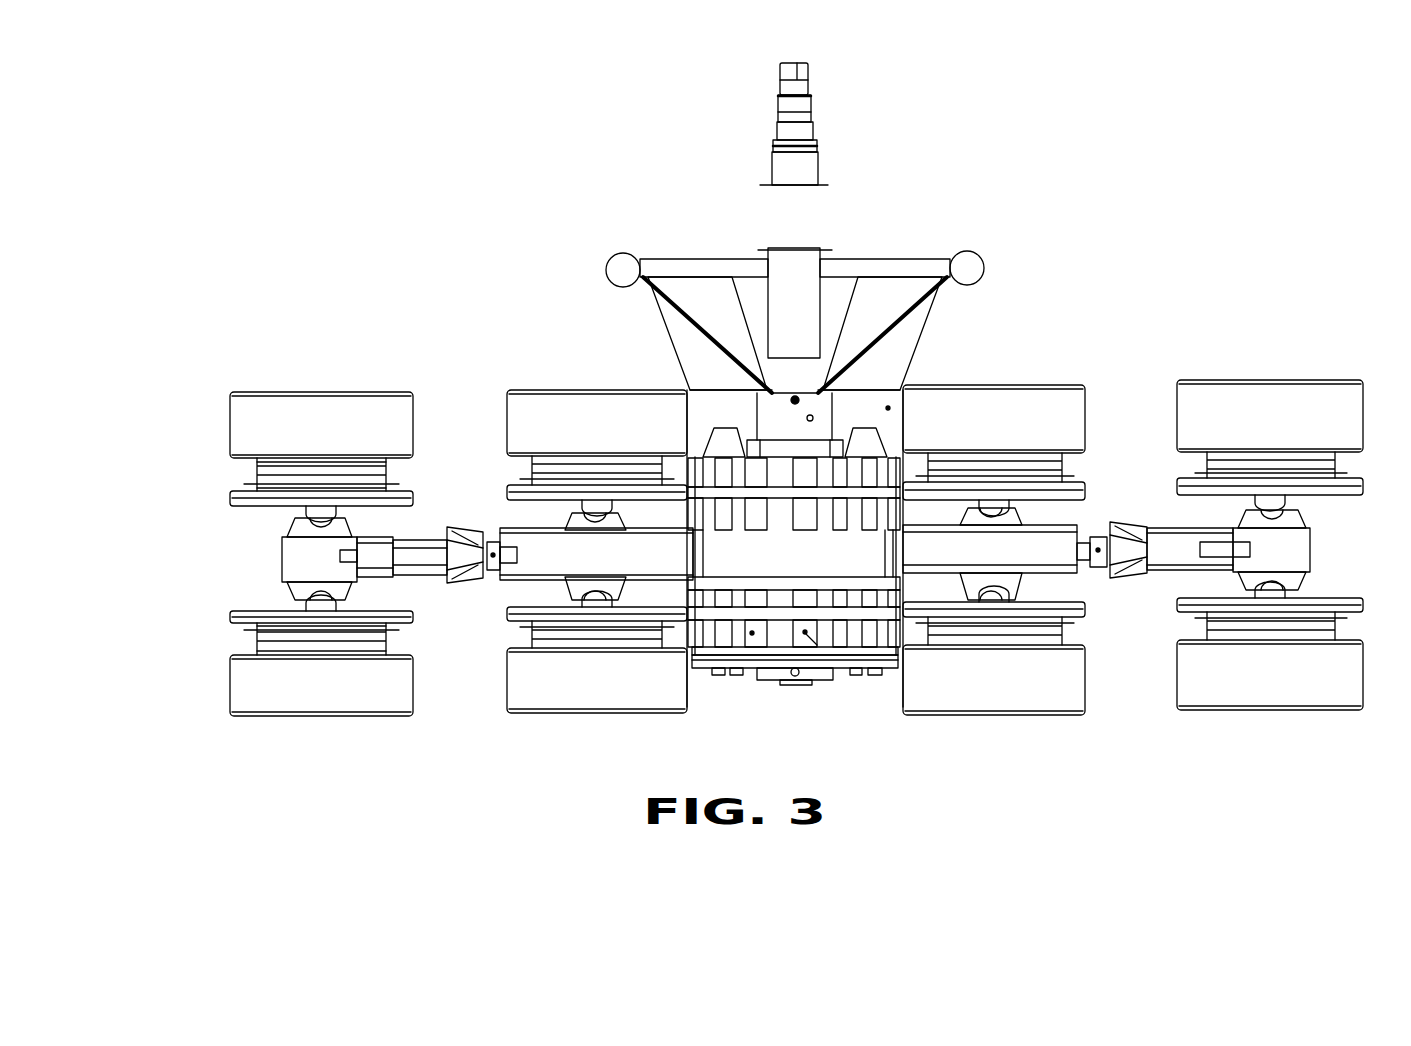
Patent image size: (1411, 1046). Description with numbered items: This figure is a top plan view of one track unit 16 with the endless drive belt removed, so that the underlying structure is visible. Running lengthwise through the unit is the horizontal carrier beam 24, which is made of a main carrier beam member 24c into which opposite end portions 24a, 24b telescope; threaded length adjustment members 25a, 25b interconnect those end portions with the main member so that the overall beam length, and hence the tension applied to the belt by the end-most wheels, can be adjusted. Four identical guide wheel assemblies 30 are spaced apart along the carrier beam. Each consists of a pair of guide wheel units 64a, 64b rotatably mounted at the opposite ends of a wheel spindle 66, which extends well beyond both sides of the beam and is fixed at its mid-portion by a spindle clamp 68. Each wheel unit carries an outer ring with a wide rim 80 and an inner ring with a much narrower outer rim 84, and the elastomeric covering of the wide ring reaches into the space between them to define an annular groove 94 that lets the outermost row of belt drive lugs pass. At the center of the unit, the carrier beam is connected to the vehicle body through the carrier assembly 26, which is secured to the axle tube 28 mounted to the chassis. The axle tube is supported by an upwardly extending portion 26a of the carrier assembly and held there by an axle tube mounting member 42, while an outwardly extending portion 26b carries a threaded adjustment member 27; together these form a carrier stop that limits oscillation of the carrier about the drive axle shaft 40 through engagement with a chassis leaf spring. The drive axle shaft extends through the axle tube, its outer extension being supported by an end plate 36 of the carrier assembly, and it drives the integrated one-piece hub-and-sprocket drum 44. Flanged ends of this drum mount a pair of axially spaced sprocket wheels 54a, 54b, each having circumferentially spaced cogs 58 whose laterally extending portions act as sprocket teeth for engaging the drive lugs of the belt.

The track unit 16 is at (396, 311).
The drive axle shaft 40 is at (808, 108).
The axle tube 28 is at (770, 298).
The threaded adjustment member 27 is at (614, 254).
The outwardly extending portion of carrier assembly 26b is at (665, 318).
The carrier assembly 26 is at (684, 402).
The axle tube mounting member 42 is at (813, 418).
The upwardly extending portion of carrier assembly 26a is at (890, 408).
The sprocket wheel 54b is at (788, 447).
The integrated one-piece hub-and-sprocket drum 44 is at (794, 556).
The cogs 58 is at (765, 677).
The end plate 36 is at (752, 634).
The sprocket wheel 54a is at (840, 668).
The guide wheel unit 64b is at (229, 433).
The guide wheel unit 64a is at (227, 698).
The wide rim 80 is at (282, 412).
The annular groove 94 is at (256, 473).
The narrower outer rim 84 is at (250, 497).
The wheel spindle 66 is at (300, 510).
The end portion of carrier beam 24a is at (290, 565).
The spindle clamp 68 is at (370, 527).
The threaded length adjustment member 25a is at (420, 555).
The main carrier beam member 24c is at (596, 554).
The carrier beam 24 is at (501, 589).
The threaded length adjustment member 25b is at (1160, 546).
The end portion of carrier beam 24b is at (1310, 560).
The guide wheel assembly 30 is at (288, 728).